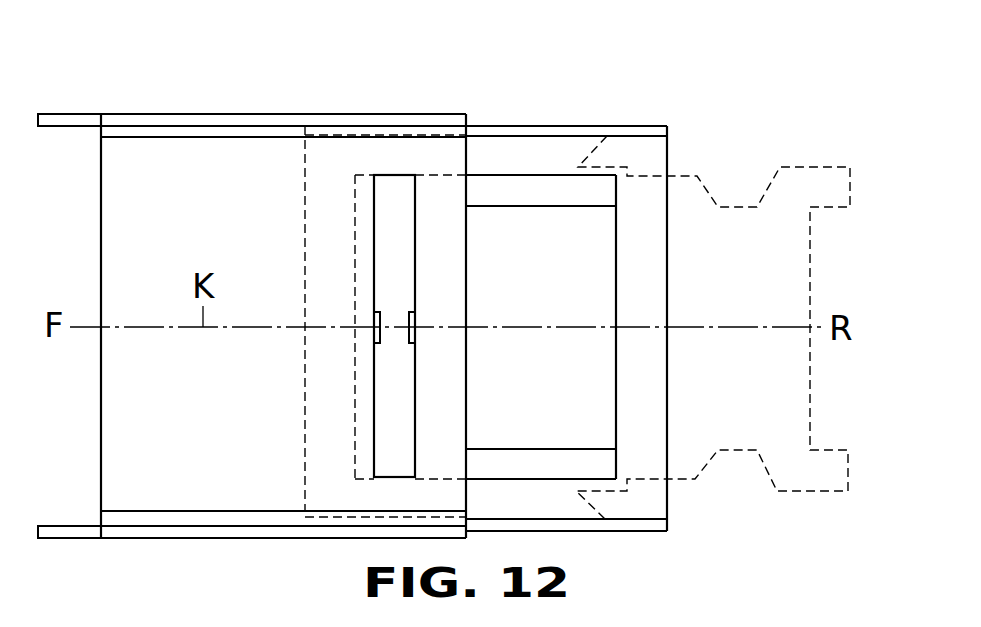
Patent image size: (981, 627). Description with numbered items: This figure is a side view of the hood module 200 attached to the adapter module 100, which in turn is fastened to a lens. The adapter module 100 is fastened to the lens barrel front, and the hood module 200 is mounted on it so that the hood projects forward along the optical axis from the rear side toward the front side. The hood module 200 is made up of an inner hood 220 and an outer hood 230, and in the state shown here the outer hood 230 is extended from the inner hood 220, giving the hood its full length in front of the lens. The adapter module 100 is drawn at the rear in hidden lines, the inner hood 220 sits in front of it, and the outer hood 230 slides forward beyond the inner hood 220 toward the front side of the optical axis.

The adapter module 100 is at (678, 147).
The hood module 200 is at (305, 84).
The inner hood 220 is at (516, 112).
The outer hood 230 is at (76, 101).